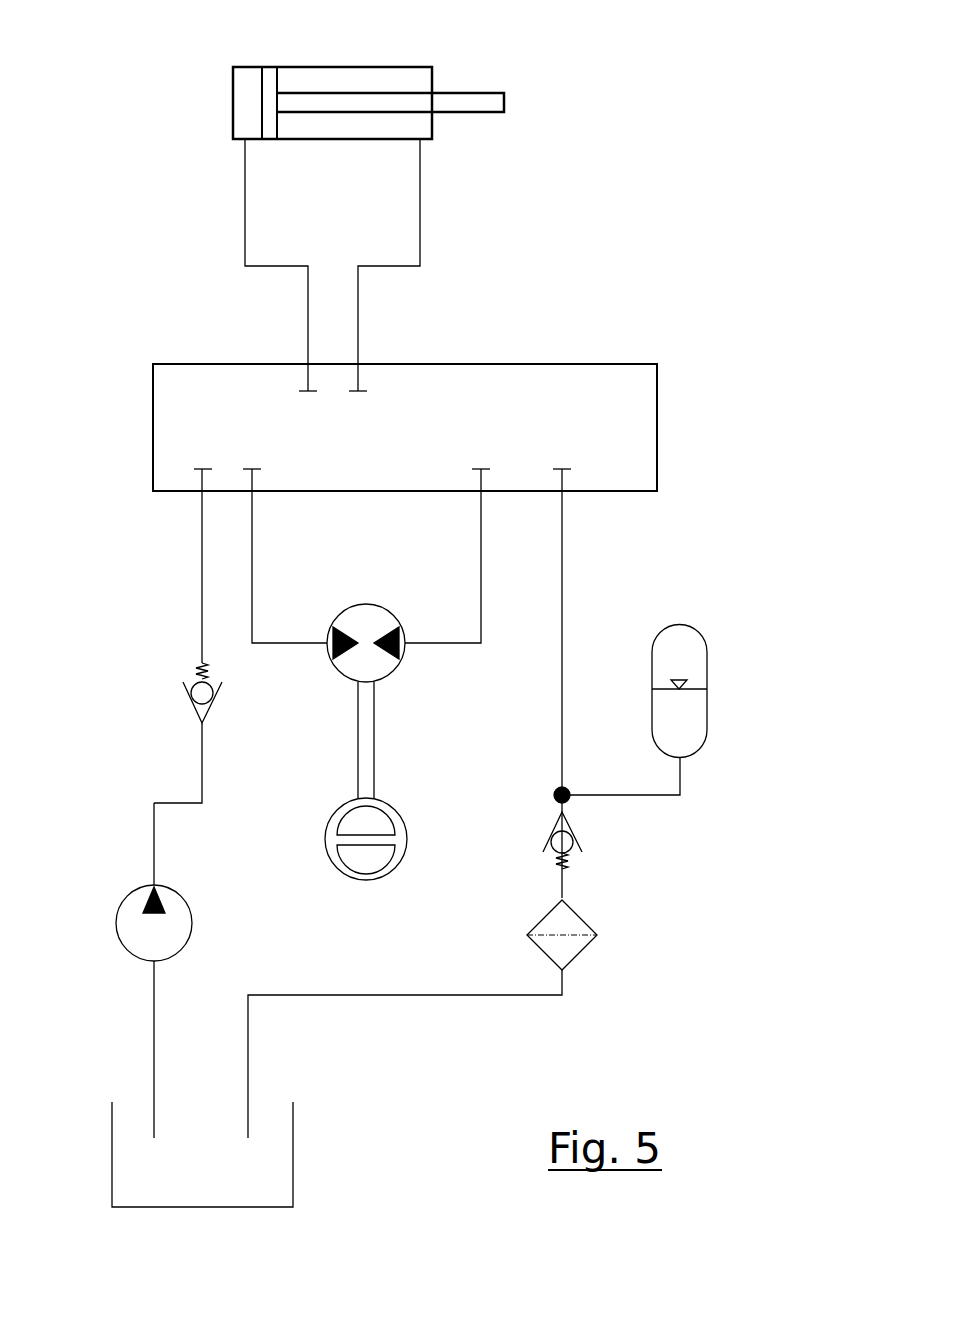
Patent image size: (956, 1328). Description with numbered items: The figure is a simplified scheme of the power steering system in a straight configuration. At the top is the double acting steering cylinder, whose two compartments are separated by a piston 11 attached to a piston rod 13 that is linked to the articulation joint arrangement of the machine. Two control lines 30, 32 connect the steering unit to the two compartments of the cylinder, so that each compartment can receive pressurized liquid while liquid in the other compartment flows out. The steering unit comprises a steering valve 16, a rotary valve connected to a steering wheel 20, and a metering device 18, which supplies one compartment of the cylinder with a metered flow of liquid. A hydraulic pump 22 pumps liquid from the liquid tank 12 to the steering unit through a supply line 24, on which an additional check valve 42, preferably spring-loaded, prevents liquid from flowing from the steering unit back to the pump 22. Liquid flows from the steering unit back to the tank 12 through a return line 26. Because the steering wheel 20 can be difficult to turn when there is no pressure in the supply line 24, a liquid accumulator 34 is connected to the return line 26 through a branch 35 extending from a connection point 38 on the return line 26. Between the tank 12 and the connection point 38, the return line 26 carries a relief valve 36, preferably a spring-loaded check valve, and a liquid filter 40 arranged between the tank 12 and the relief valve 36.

The piston 11 is at (273, 82).
The liquid tank 12 is at (258, 1207).
The piston rod 13 is at (475, 102).
The steering valve 16 is at (405, 427).
The metering device 18 is at (365, 620).
The steering wheel 20 is at (365, 873).
The hydraulic pump 22 is at (125, 897).
The supply line 24 is at (202, 767).
The return line 26 is at (562, 514).
The control line 30 is at (291, 352).
The control line 32 is at (373, 352).
The liquid accumulator 34 is at (662, 713).
The branch 35 is at (673, 797).
The relief valve 36 is at (600, 843).
The connection point 38 is at (555, 797).
The liquid filter 40 is at (583, 950).
The check valve 42 is at (173, 672).